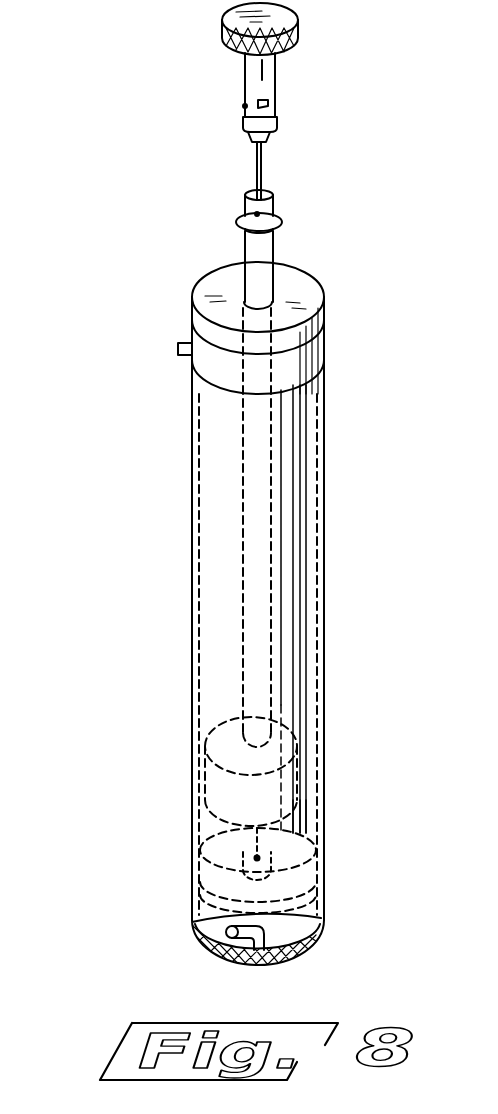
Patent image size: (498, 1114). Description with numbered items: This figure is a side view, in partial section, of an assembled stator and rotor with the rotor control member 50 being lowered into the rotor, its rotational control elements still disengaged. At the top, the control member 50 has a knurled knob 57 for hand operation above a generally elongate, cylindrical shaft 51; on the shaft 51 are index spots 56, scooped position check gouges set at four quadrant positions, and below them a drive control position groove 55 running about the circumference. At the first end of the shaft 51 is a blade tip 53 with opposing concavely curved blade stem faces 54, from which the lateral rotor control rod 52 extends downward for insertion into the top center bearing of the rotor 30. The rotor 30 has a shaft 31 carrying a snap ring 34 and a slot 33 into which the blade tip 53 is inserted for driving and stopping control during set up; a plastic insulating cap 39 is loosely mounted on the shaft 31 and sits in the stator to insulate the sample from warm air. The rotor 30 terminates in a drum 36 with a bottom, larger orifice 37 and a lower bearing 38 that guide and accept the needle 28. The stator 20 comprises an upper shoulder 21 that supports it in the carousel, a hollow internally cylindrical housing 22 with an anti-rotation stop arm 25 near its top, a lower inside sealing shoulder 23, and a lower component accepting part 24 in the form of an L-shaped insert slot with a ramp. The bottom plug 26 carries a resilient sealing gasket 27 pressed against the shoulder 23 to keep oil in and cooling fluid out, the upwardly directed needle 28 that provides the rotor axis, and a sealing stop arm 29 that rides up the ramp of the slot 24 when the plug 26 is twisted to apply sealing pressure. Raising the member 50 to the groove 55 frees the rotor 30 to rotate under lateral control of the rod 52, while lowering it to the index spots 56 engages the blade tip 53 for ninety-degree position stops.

The stator 20 is at (192, 465).
The upper shoulder 21 is at (293, 390).
The housing 22 is at (323, 550).
The lower inside sealing shoulder 23 is at (290, 875).
The lower component accepting part 24 is at (262, 953).
The anti-rotation stop arm 25 is at (178, 357).
The plug 26 is at (325, 912).
The sealing gasket 27 is at (318, 878).
The needle 28 is at (243, 842).
The sealing stop arm 29 is at (193, 915).
The rotor 30 is at (250, 250).
The shaft 31 is at (275, 642).
The slot 33 is at (236, 217).
The snap ring 34 is at (280, 225).
The drum 36 is at (205, 775).
The bottom orifice 37 is at (250, 848).
The lower bearing 38 is at (300, 750).
The insulating cap 39 is at (313, 300).
The rotor control member 50 is at (168, 60).
The shaft 51 is at (263, 78).
The lateral rotor control rod 52 is at (262, 183).
The blade tip 53 is at (255, 170).
The blade stem faces 54 is at (253, 147).
The drive control position groove 55 is at (245, 132).
The index spots 56 is at (245, 106).
The knurled knob 57 is at (228, 33).